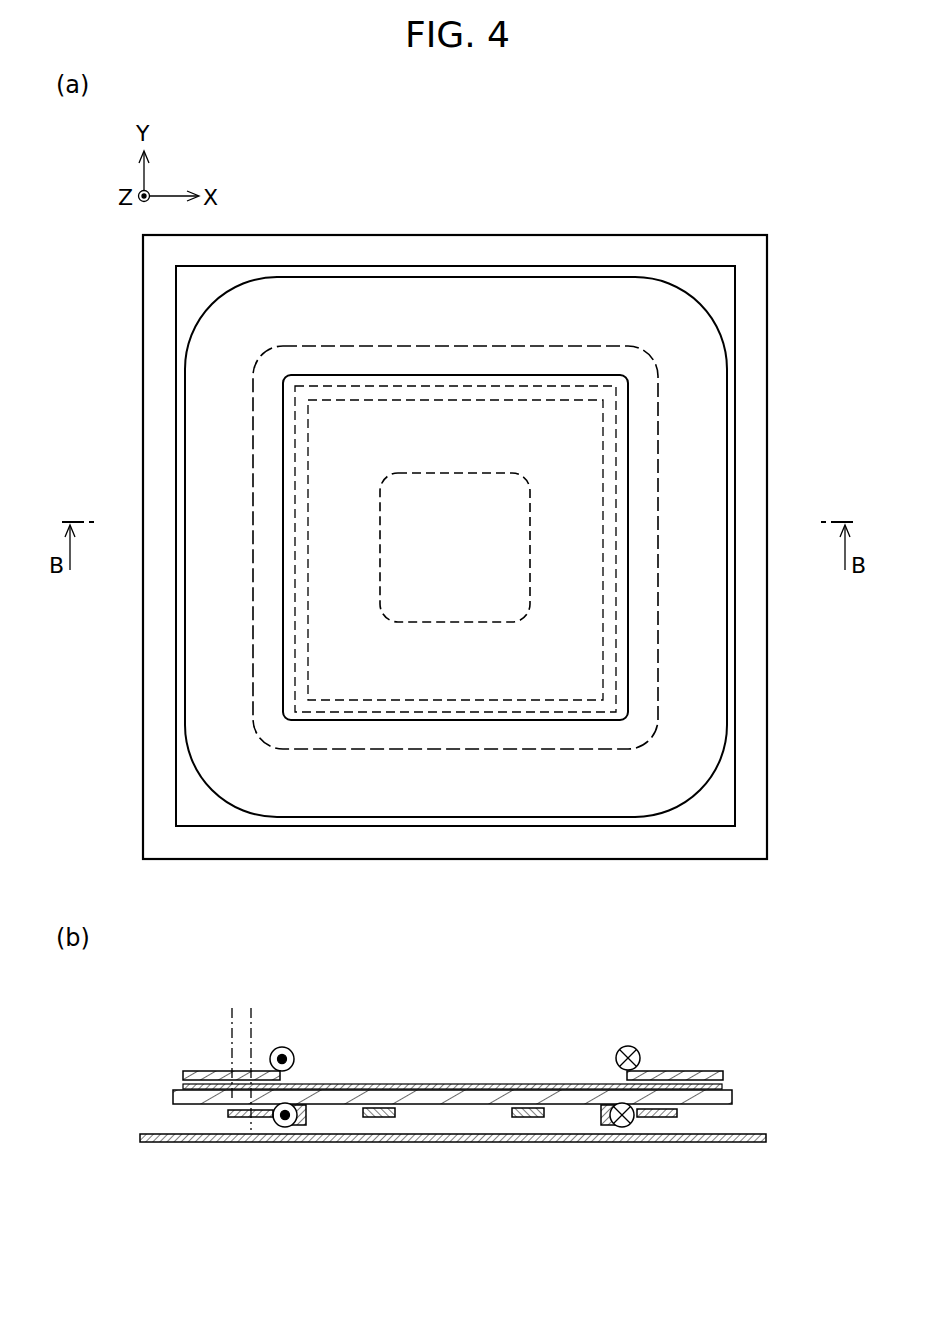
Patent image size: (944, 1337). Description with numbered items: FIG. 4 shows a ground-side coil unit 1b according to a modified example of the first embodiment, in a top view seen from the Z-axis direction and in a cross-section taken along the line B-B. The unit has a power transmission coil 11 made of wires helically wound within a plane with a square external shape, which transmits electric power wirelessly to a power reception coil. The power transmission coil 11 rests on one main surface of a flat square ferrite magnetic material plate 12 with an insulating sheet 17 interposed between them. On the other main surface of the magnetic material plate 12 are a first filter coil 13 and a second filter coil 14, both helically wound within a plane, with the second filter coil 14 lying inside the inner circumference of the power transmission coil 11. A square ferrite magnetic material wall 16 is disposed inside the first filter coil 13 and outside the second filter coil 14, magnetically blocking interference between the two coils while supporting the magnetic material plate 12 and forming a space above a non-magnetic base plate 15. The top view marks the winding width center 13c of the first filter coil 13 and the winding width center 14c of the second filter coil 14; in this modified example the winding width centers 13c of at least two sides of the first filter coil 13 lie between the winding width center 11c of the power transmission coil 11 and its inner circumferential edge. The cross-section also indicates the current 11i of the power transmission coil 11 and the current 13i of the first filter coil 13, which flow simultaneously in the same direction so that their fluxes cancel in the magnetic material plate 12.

The ground-side coil unit 1b is at (682, 231).
The power transmission coil 11 is at (716, 692).
The winding width center of the power transmission coil 11c is at (232, 1020).
The current of the power transmission coil 11i is at (292, 1050).
The magnetic material plate 12 is at (731, 753).
The first filter coil 13 is at (228, 1113).
The winding width center of the first filter coil 13c is at (425, 749).
The current of the first filter coil 13i is at (283, 1128).
The second filter coil 14 is at (372, 1118).
The winding width center of the second filter coil 14c is at (422, 622).
The base plate 15 is at (763, 803).
The magnetic material wall 16 is at (607, 585).
The insulating sheet 17 is at (508, 1084).